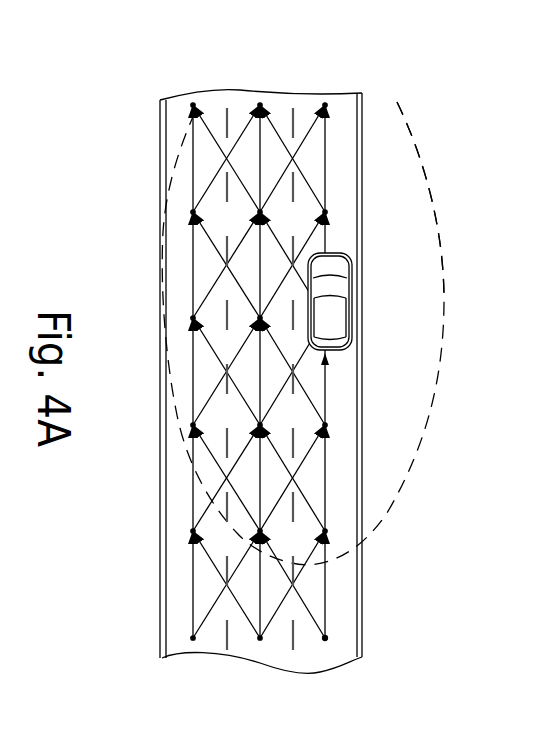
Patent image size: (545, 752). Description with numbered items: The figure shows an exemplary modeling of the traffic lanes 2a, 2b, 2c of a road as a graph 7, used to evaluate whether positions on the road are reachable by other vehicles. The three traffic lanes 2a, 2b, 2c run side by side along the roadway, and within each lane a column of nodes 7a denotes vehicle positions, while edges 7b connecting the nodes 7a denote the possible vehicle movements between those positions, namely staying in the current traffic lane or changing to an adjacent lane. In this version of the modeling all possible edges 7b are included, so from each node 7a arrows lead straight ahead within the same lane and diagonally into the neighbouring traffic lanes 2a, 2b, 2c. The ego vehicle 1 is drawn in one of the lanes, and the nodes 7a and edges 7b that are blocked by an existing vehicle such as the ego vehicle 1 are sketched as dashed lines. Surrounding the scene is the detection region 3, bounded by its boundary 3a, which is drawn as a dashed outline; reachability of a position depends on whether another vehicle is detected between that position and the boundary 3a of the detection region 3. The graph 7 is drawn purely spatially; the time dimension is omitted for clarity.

The ego vehicle 1 is at (352, 333).
The traffic lane 2a is at (303, 111).
The traffic lane 2b is at (238, 111).
The traffic lane 2c is at (173, 111).
The detection region 3 is at (385, 213).
The boundary of detection region 3a is at (412, 121).
The graph 7 is at (248, 637).
The nodes 7a is at (330, 636).
The edges 7b is at (327, 383).